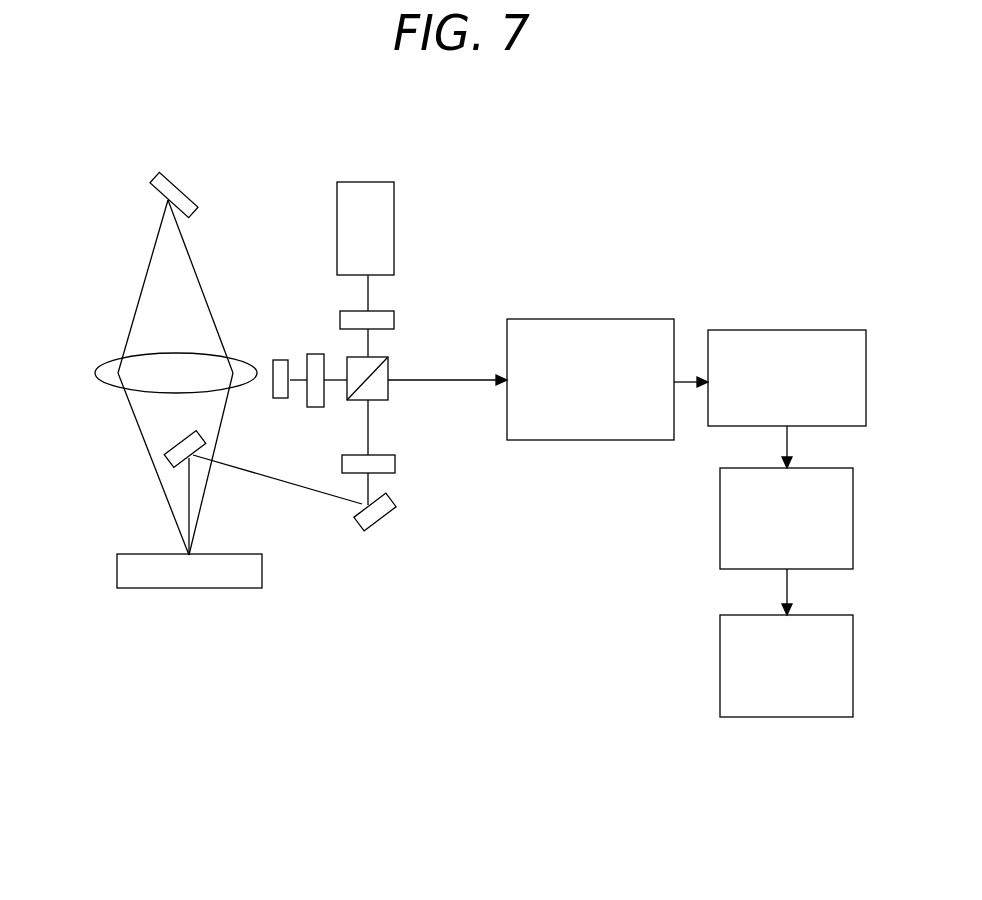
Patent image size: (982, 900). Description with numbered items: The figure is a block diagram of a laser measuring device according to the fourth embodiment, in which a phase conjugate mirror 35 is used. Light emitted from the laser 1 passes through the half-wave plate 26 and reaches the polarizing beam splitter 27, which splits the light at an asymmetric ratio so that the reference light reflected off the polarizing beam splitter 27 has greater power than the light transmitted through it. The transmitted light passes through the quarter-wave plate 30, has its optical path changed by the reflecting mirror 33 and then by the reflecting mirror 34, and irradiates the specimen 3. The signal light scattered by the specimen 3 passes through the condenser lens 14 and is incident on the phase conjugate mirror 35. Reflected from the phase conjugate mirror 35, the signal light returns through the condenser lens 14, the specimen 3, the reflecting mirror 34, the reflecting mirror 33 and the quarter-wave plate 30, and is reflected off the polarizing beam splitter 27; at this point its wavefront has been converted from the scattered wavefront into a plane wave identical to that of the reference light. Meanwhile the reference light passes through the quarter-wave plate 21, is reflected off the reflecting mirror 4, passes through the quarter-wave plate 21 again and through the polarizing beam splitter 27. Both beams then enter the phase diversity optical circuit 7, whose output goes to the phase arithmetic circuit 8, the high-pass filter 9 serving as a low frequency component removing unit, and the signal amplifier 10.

The laser 1 is at (370, 198).
The specimen 3 is at (218, 572).
The reflecting mirror 4 is at (283, 363).
The phase diversity optical circuit 7 is at (613, 330).
The phase arithmetic circuit 8 is at (840, 340).
The high-pass filter 9 is at (842, 522).
The signal amplifier 10 is at (842, 678).
The condenser lens 14 is at (108, 373).
The λ/4 plate 21 is at (318, 352).
The λ/2 plate 26 is at (373, 317).
The polarizing beam splitter 27 is at (375, 392).
The λ/4 plate 30 is at (387, 460).
The reflecting mirror 33 is at (378, 512).
The reflecting mirror 34 is at (185, 447).
The phase conjugate mirror 35 is at (175, 193).